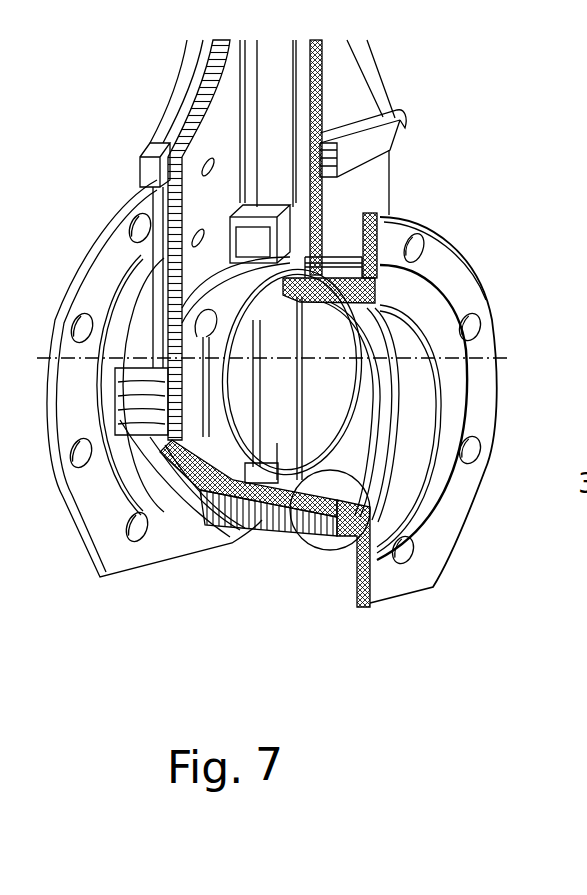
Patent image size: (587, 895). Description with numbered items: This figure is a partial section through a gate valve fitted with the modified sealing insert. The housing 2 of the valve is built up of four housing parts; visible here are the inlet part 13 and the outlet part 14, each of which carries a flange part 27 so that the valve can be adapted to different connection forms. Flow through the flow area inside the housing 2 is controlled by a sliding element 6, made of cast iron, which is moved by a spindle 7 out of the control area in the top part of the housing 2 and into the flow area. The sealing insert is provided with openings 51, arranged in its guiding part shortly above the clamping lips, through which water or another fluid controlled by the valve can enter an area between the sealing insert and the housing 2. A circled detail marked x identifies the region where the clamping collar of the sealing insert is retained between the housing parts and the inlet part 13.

The housing 2 is at (373, 190).
The sliding element 6 is at (253, 523).
The spindle 7 is at (278, 117).
The inlet part 13 is at (423, 487).
The outlet part 14 is at (129, 289).
The flange part 27 is at (450, 263).
The openings 51 is at (170, 103).
The detail circle x is at (303, 543).